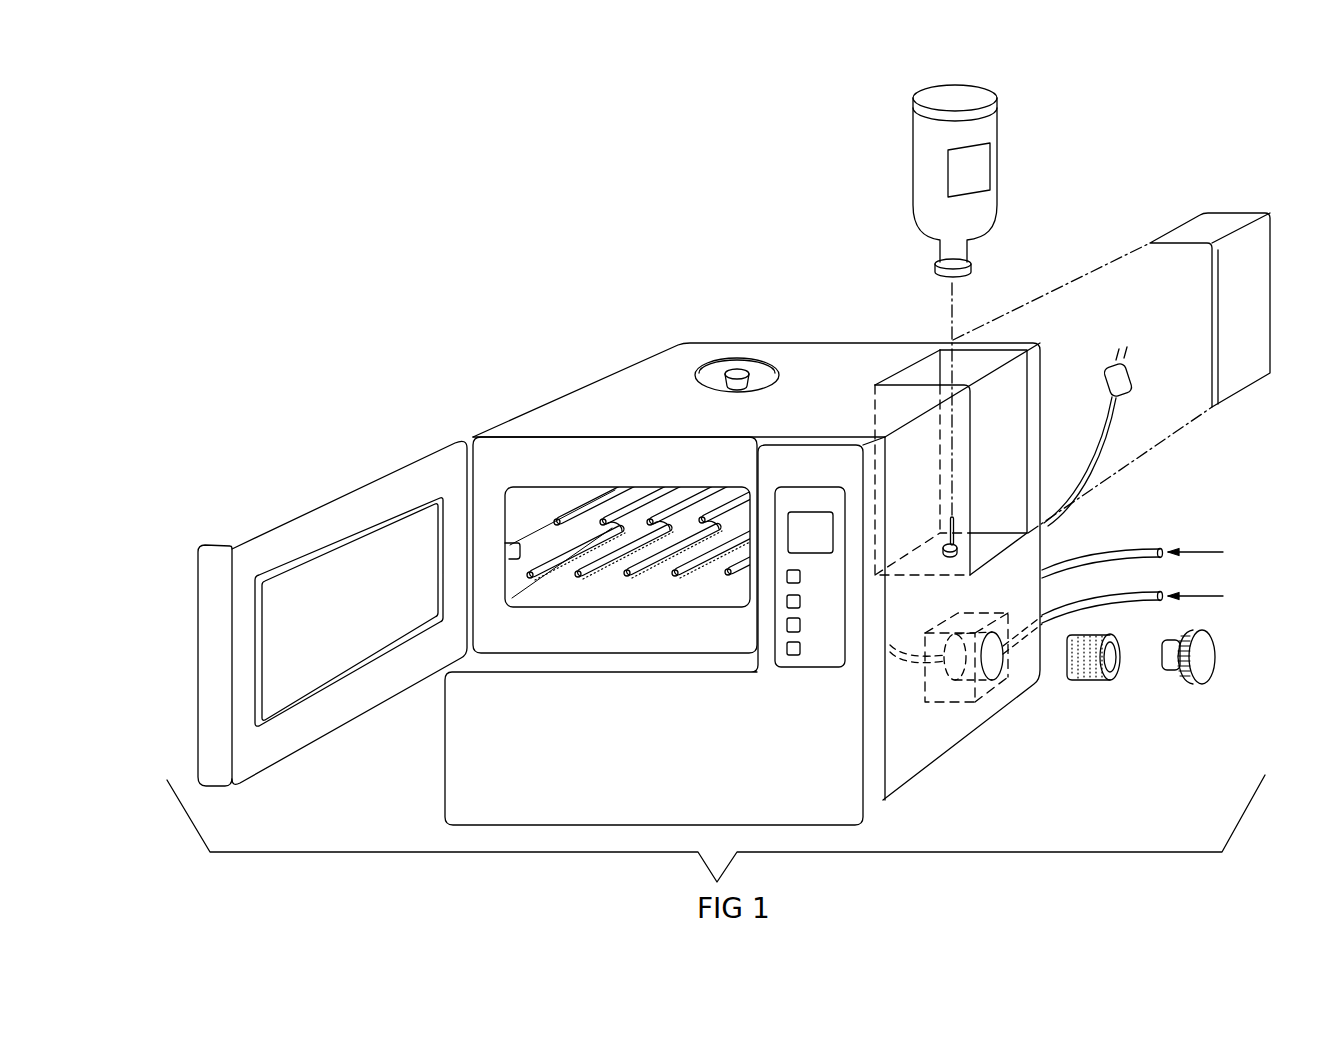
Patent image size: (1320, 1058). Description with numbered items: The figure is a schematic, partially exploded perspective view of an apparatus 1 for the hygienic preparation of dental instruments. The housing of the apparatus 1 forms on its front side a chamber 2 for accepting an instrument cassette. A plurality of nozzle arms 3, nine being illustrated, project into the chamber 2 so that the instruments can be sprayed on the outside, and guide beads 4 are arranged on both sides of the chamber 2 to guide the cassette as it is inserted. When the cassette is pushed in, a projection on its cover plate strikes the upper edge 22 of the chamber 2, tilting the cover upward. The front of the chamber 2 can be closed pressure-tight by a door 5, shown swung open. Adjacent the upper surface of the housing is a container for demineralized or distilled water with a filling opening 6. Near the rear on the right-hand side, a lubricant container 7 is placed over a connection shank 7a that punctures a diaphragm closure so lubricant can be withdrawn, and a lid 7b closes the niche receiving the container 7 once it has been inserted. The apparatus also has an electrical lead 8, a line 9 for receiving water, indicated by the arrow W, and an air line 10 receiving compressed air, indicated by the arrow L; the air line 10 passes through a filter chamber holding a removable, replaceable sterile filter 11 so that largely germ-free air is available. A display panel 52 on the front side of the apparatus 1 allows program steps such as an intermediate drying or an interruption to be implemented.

The apparatus 1 is at (602, 372).
The chamber 2 is at (637, 592).
The nozzle arms 3 is at (578, 577).
The guide beads 4 is at (518, 548).
The door 5 is at (270, 520).
The filling opening 6 is at (718, 373).
The container 7 is at (987, 132).
The connection shank 7a is at (957, 527).
The lid 7b is at (1243, 370).
The electrical lead 8 is at (1124, 385).
The line 9 is at (1130, 540).
The air line 10 is at (1118, 598).
The sterile filter 11 is at (1082, 677).
The upper edge 22 is at (528, 496).
The display panel 52 is at (810, 660).